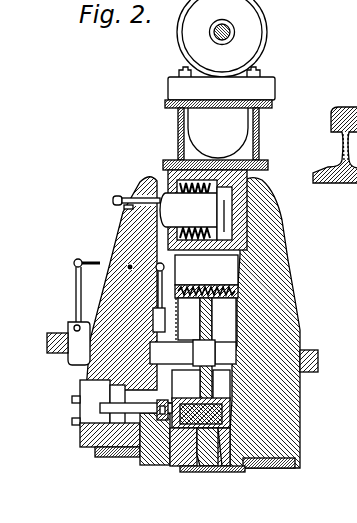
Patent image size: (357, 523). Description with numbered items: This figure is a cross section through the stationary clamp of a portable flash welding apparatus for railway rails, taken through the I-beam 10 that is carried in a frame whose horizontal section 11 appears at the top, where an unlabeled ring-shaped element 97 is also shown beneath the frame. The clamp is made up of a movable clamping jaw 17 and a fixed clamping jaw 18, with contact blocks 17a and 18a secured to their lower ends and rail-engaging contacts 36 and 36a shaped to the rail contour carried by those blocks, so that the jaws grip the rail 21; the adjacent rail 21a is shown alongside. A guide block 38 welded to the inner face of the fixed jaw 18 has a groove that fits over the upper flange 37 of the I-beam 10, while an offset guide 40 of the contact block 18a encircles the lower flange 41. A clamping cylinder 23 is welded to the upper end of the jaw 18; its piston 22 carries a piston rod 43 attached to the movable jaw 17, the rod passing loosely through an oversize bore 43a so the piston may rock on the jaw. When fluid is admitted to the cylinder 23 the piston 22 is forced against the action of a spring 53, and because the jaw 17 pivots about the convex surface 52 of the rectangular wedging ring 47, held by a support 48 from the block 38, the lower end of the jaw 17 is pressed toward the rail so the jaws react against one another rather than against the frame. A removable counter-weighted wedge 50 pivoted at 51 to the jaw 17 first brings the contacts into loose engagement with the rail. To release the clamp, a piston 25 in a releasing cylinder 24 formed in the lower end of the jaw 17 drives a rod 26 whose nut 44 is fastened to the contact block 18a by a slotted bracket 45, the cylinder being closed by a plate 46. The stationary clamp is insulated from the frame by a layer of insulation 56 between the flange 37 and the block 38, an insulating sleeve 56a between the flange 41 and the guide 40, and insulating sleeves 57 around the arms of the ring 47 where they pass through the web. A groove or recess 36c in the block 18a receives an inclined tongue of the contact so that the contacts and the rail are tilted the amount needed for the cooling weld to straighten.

The I-beam 10 is at (215, 320).
The horizontal section 11 is at (261, 131).
The clamping jaw 17 is at (119, 233).
The contact block 17a is at (148, 463).
The clamping jaw 18 is at (284, 246).
The contact block 18a is at (238, 468).
The rail 21 is at (195, 473).
The rail 21a is at (343, 181).
The piston 22 is at (226, 200).
The clamping cylinder 23 is at (243, 214).
The releasing cylinder 24 is at (86, 428).
The piston 25 is at (110, 400).
The rod 26 is at (98, 452).
The contact 36 is at (183, 463).
The contact 36a is at (205, 467).
The groove or recess 36c is at (222, 466).
The upper flange 37 is at (190, 290).
The guide block 38 is at (226, 290).
The offset portion or guide 40 is at (183, 398).
The lower flange 41 is at (217, 400).
The piston rod 43 is at (130, 196).
The bore 43a is at (124, 208).
The nut 44 is at (165, 400).
The bracket 45 is at (160, 404).
The plate 46 is at (72, 412).
The wedging ring 47 is at (318, 362).
The support 48 is at (182, 310).
The counter-weighted wedge 50 is at (75, 322).
The pivot 51 is at (129, 266).
The convex surface 52 is at (47, 343).
The spring 53 is at (171, 168).
The layer of insulation 56 is at (204, 287).
The insulating sleeve 56a is at (226, 410).
The sleeve of insulating material 57 is at (196, 352).
The ring 97 is at (242, 150).